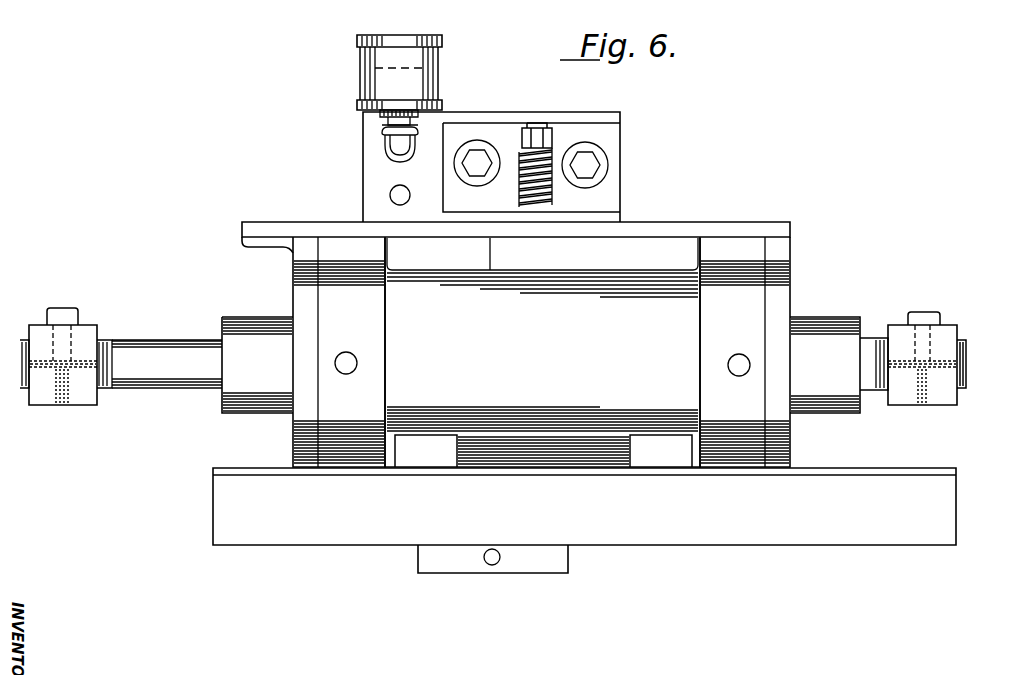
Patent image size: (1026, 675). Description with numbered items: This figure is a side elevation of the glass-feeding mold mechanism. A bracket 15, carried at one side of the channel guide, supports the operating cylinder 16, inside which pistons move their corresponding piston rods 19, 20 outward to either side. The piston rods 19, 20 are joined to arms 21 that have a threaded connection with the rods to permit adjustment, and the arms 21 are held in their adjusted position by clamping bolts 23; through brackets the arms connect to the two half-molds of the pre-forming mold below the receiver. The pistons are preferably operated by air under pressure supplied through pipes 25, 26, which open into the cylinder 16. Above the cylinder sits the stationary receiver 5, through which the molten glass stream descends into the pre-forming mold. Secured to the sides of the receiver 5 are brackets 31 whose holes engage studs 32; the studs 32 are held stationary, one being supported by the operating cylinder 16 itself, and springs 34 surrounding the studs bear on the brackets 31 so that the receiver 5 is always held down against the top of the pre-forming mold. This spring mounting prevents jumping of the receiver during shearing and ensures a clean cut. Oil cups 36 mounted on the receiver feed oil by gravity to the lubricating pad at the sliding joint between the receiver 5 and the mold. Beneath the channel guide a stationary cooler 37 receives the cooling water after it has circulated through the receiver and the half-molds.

The stationary receiver 5 is at (492, 114).
The bracket 15 is at (838, 462).
The operating cylinder 16 is at (542, 352).
The piston rod 19 is at (176, 388).
The piston rod 20 is at (967, 362).
The arm 21 is at (88, 338).
The clamping bolt 23 is at (62, 316).
The pipe 25 is at (348, 353).
The pipe 26 is at (740, 355).
The bracket 31 is at (620, 133).
The stud 32 is at (540, 150).
The spring 34 is at (553, 186).
The oil cup 36 is at (358, 80).
The stationary cooler 37 is at (531, 566).